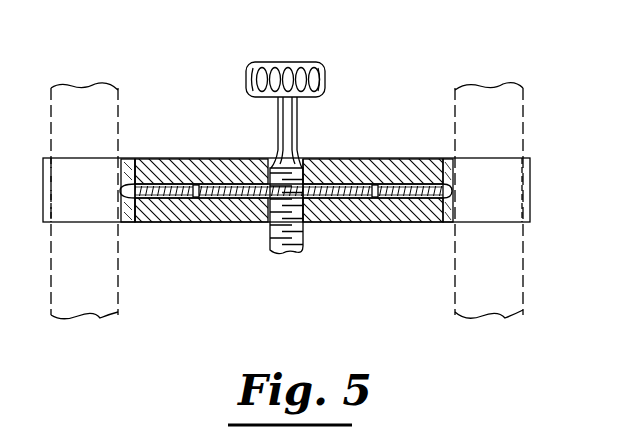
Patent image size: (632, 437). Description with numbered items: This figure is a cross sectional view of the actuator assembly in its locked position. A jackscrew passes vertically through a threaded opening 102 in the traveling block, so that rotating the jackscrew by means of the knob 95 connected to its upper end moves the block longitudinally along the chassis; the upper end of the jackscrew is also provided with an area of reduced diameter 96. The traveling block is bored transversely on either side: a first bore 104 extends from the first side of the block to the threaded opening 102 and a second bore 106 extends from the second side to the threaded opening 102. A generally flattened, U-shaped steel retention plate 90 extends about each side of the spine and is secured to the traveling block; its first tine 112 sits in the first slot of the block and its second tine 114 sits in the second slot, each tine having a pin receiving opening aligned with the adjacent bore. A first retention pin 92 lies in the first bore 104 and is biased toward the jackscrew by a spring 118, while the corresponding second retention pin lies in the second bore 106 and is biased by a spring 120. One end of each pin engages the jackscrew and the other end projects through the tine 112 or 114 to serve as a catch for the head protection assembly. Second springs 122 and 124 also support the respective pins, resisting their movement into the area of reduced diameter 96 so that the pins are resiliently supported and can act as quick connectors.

The retention plate 90 is at (43, 186).
The first retention pin 92 is at (172, 183).
The knob 95 is at (286, 62).
The area of reduced diameter 96 is at (297, 128).
The threaded opening 102 is at (278, 148).
The first bore 104 is at (163, 222).
The second bore 106 is at (359, 198).
The first tine 112 is at (122, 222).
The second tine 114 is at (448, 212).
The spring 118 is at (181, 222).
The spring 120 is at (411, 198).
The second spring 122 is at (228, 158).
The second spring 124 is at (335, 158).